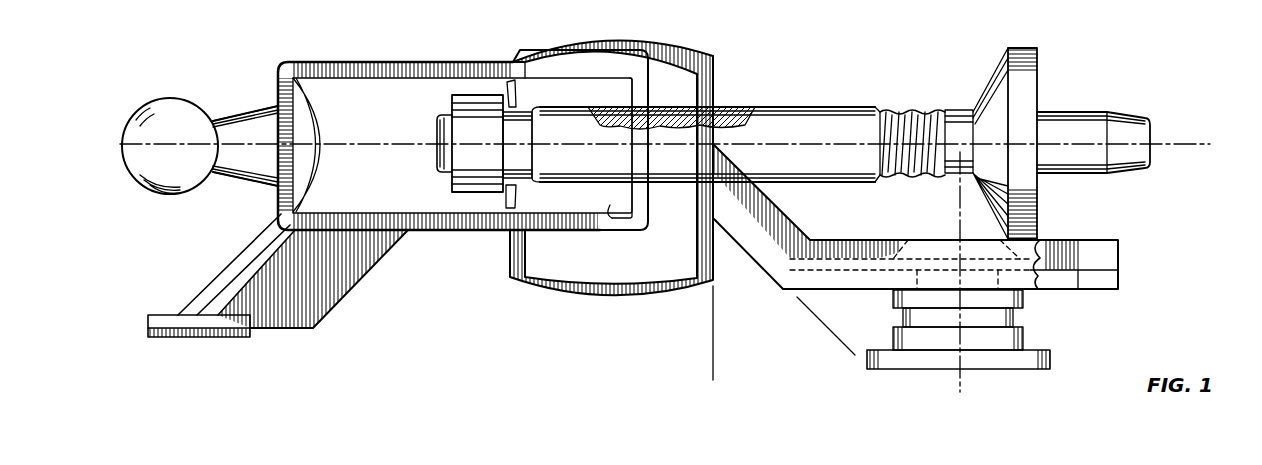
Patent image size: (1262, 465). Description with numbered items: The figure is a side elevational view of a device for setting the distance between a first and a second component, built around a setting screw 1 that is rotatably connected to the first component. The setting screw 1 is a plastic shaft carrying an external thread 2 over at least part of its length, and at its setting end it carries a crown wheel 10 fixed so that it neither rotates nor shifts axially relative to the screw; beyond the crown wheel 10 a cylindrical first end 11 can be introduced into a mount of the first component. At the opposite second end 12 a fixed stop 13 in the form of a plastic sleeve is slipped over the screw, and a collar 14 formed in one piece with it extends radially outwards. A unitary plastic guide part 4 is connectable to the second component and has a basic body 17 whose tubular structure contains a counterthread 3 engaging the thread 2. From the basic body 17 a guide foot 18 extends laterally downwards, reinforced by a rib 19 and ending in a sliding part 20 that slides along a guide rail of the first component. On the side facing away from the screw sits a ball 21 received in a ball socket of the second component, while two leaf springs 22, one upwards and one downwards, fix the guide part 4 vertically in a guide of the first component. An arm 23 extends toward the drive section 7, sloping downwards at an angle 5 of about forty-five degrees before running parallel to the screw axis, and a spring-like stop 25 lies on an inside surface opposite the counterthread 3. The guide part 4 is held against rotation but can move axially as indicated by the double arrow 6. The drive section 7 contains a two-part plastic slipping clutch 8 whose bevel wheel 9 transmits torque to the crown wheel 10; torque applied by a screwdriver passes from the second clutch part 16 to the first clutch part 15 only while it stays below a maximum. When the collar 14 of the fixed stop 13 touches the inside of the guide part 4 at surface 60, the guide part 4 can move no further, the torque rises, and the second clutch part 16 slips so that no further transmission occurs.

The setting screw 1 is at (912, 118).
The external thread 2 is at (882, 120).
The counterthread 3 is at (748, 108).
The guide part 4 is at (246, 72).
The angle 5 is at (822, 326).
The double arrow 6 is at (380, 52).
The drive section 7 is at (1078, 209).
The slipping clutch 8 is at (886, 294).
The bevel wheel 9 is at (935, 222).
The crown wheel 10 is at (1025, 82).
The first end 11 is at (1122, 128).
The second end 12 is at (437, 150).
The fixed stop 13 is at (480, 125).
The collar 14 is at (508, 198).
The first clutch part 15 is at (1040, 264).
The second clutch part 16 is at (990, 338).
The basic body 17 is at (560, 68).
The guide foot 18 is at (200, 297).
The rib 19 is at (335, 285).
The sliding part 20 is at (205, 334).
The ball 21 is at (160, 180).
The leaf springs 22 is at (612, 46).
The arm 23 is at (1108, 255).
The stop 25 is at (330, 118).
The surface 60 is at (612, 212).